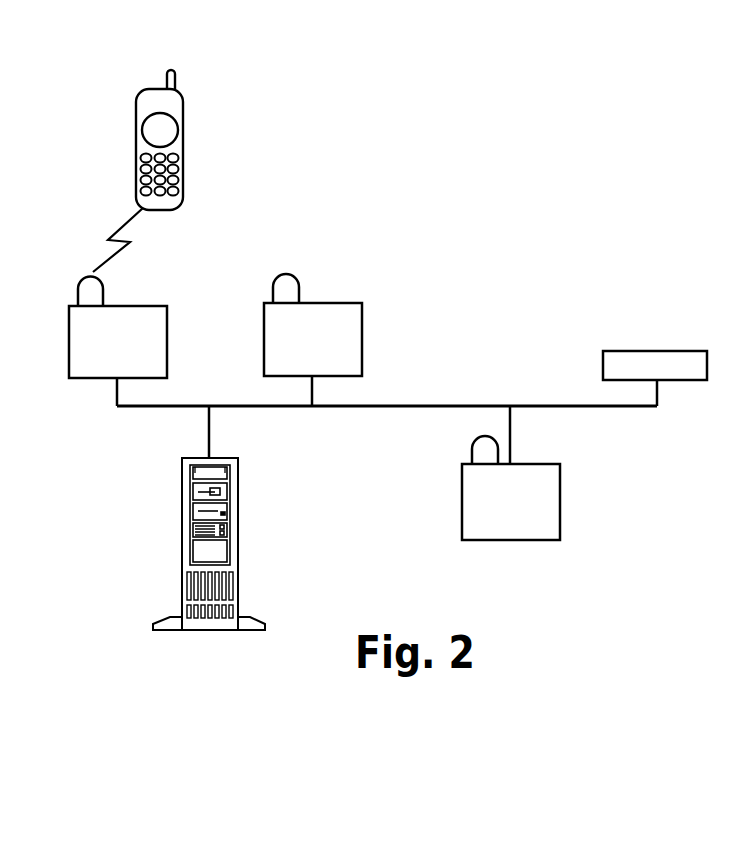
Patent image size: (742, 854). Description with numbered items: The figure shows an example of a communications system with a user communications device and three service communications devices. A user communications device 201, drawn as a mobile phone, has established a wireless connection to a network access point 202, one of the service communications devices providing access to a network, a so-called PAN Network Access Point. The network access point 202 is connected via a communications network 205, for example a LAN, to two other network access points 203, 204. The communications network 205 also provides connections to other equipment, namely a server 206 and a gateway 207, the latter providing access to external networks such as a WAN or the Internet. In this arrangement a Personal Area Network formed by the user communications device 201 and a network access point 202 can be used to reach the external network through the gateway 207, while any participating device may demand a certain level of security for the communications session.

The user communications device 201 is at (185, 122).
The network access point 202 is at (118, 305).
The network access point 203 is at (312, 303).
The network access point 204 is at (561, 497).
The communications network 205 is at (463, 404).
The server 206 is at (238, 540).
The gateway 207 is at (650, 351).